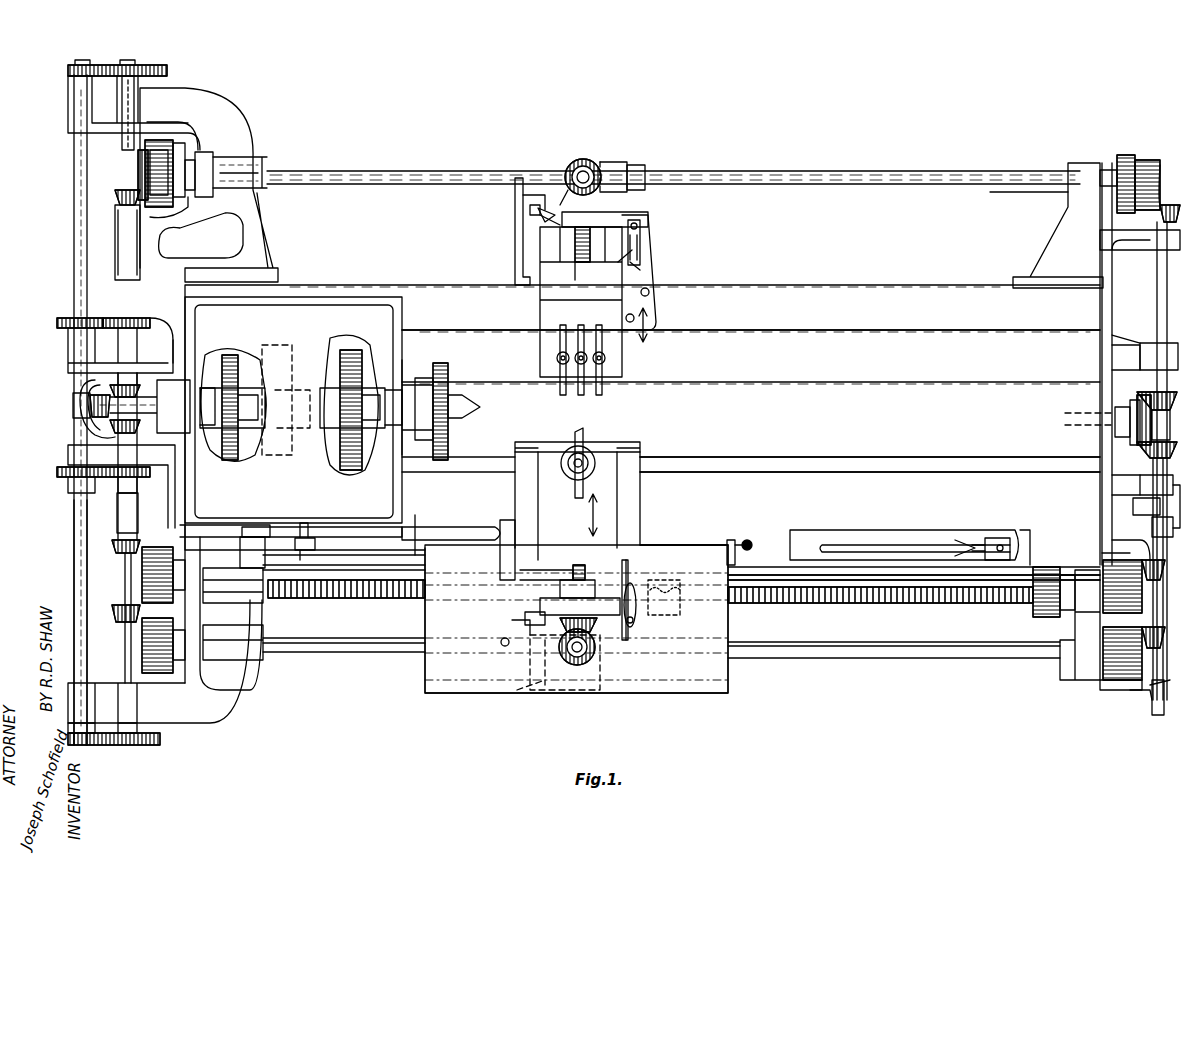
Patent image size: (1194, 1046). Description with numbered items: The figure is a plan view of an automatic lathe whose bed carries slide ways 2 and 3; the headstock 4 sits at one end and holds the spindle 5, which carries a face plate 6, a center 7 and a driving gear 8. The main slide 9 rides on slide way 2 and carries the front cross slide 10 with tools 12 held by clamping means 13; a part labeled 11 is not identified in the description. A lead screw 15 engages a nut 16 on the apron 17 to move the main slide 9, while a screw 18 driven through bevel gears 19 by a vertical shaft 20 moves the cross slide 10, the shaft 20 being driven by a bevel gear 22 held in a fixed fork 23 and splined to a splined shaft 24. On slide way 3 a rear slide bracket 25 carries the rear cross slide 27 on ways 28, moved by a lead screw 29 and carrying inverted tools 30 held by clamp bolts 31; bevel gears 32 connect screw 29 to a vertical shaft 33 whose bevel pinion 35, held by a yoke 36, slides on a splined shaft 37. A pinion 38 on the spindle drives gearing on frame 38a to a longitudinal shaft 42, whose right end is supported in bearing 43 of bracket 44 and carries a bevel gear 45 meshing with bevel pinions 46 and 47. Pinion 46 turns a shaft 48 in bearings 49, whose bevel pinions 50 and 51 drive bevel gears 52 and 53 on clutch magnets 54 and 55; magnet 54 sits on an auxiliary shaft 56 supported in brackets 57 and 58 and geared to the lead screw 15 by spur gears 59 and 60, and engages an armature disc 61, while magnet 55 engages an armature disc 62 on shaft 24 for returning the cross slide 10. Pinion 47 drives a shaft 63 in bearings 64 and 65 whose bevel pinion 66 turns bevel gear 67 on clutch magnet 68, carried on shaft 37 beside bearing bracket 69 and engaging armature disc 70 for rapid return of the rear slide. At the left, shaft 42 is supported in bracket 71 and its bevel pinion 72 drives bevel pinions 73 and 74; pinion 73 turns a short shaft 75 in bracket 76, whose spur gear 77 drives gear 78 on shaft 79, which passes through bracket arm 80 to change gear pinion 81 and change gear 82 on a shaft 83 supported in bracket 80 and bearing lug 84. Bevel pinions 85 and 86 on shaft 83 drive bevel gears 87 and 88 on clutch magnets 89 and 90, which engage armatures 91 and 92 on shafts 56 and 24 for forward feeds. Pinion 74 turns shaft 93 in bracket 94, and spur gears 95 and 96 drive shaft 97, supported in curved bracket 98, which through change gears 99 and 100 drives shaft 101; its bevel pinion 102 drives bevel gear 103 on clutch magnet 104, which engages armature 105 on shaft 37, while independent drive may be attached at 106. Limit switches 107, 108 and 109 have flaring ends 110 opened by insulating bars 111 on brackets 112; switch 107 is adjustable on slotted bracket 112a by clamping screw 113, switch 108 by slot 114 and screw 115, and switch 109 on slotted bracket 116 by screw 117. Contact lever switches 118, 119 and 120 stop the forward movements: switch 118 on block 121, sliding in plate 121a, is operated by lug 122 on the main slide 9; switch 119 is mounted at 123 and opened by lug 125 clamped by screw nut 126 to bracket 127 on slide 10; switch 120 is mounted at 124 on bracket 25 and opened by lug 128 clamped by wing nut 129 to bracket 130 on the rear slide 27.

The slide way 2 is at (820, 475).
The slide way 3 is at (785, 355).
The headstock 4 is at (380, 300).
The spindle 5 is at (375, 405).
The face plate 6 is at (448, 380).
The center 7 is at (470, 400).
The gear 8 is at (350, 350).
The carriage or main slide 9 is at (685, 522).
The cross slide 10 is at (605, 520).
The carriage top plate 11 is at (610, 455).
The tools 12 is at (585, 440).
The clamping means 13 is at (576, 472).
The lead screw 15 is at (800, 604).
The nut 16 is at (680, 612).
The apron 17 is at (690, 690).
The screw 18 is at (572, 568).
The bevel gears 19 is at (605, 630).
The vertical shaft 20 is at (575, 660).
The bevel gear 22 is at (528, 666).
The fixed fork 23 is at (515, 700).
The splined shaft 24 is at (805, 658).
The slide bracket 25 is at (620, 217).
The rear cross slide 27 is at (640, 300).
The ways 28 is at (540, 260).
The lead screw 29 is at (580, 255).
The tools 30 is at (598, 325).
The clamp bolts 31 is at (556, 348).
The bevel gears 32 is at (575, 160).
The vertical shaft 33 is at (590, 175).
The bevel pinion 35 is at (625, 160).
The yoke or bearing 36 is at (645, 172).
The splined shaft 37 is at (385, 160).
The pinion 38 is at (240, 385).
The frame 38a is at (287, 400).
The shaft 42 is at (71, 406).
The bearing 43 is at (1112, 425).
The bracket 44 is at (1100, 362).
The bevel gear 45 is at (1160, 410).
The bevel pinion 46 is at (1150, 450).
The bevel pinion 47 is at (1110, 358).
The shaft 48 is at (1133, 505).
The bearings 49 is at (1138, 480).
The bevel pinion 50 is at (1122, 586).
The bevel pinion 51 is at (1122, 653).
The bevel gear 52 is at (1120, 548).
The bevel gear 53 is at (1150, 690).
The clutch magnet 54 is at (1102, 554).
The clutch magnet 55 is at (1135, 692).
The auxiliary shaft 56 is at (460, 545).
The bracket 57 is at (1075, 625).
The bracket 58 is at (263, 612).
The spur gear 59 is at (1035, 540).
The spur gear 60 is at (1033, 612).
The clutch armature disc 61 is at (1070, 585).
The clutch armature disc 62 is at (1100, 683).
The shaft 63 is at (1156, 292).
The bearing 64 is at (1148, 343).
The bearing 65 is at (1134, 240).
The bevel pinion 66 is at (1170, 205).
The bevel gear 67 is at (1150, 160).
The clutch magnet 68 is at (1126, 155).
The bearing bracket 69 is at (1060, 222).
The clutch armature disc 70 is at (1105, 168).
The bearing bracket 71 is at (80, 425).
The bevel pinion 72 is at (92, 388).
The bevel pinion 73 is at (112, 428).
The bevel pinion 74 is at (142, 372).
The shaft 75 is at (140, 488).
The bearing bracket 76 is at (66, 462).
The spur gear 77 is at (150, 474).
The gear 78 is at (66, 490).
The shaft 79 is at (73, 516).
The bracket arm 80 is at (150, 713).
The change gear pinion 81 is at (80, 745).
The change gear 82 is at (145, 745).
The shaft 83 is at (124, 628).
The bearing lug 84 is at (115, 523).
The bevel pinion 85 is at (118, 555).
The bevel pinion 86 is at (114, 602).
The bevel gear 87 is at (160, 548).
The bevel gear 88 is at (200, 680).
The clutch magnet 89 is at (112, 668).
The clutch magnet 90 is at (163, 645).
The clutch armature 91 is at (182, 556).
The clutch armature 92 is at (178, 620).
The shaft 93 is at (160, 328).
The bearing bracket 94 is at (66, 340).
The spur gear 95 is at (133, 318).
The gear 96 is at (95, 318).
The shaft 97 is at (73, 270).
The curved bracket 98 is at (215, 103).
The change gear 99 is at (66, 90).
The change gear 100 is at (167, 68).
The shaft 101 is at (125, 150).
The bevel pinion 102 is at (114, 196).
The bevel gear 103 is at (150, 140).
The clutch magnet 104 is at (150, 172).
The clutch armature 105 is at (188, 150).
The driving means attachment 106 is at (1158, 705).
The limit switch 107 is at (972, 540).
The limit switch 108 is at (635, 612).
The limit switch 109 is at (644, 240).
The flaring ends 110 is at (605, 250).
The operating member 111 is at (630, 258).
The bracket 112 is at (645, 270).
The slotted bracket 112a is at (848, 523).
The clamping screw 113 is at (1003, 538).
The slot 114 is at (628, 640).
The clamping screw 115 is at (640, 620).
The slotted bracket 116 is at (648, 262).
The screw 117 is at (643, 226).
The contact lever switch 118 is at (305, 522).
The contact lever switch 119 is at (524, 612).
The contact lever switch 120 is at (538, 232).
The supporting block 121 is at (315, 530).
The plate 121a is at (462, 530).
The lug or projection 122 is at (415, 525).
The mounting 123 is at (540, 600).
The mounting 124 is at (550, 180).
The finger or lug 125 is at (510, 628).
The screw nut 126 is at (500, 645).
The bracket 127 is at (515, 555).
The actuating lug 128 is at (522, 190).
The wing nut 129 is at (528, 212).
The bracket 130 is at (530, 218).